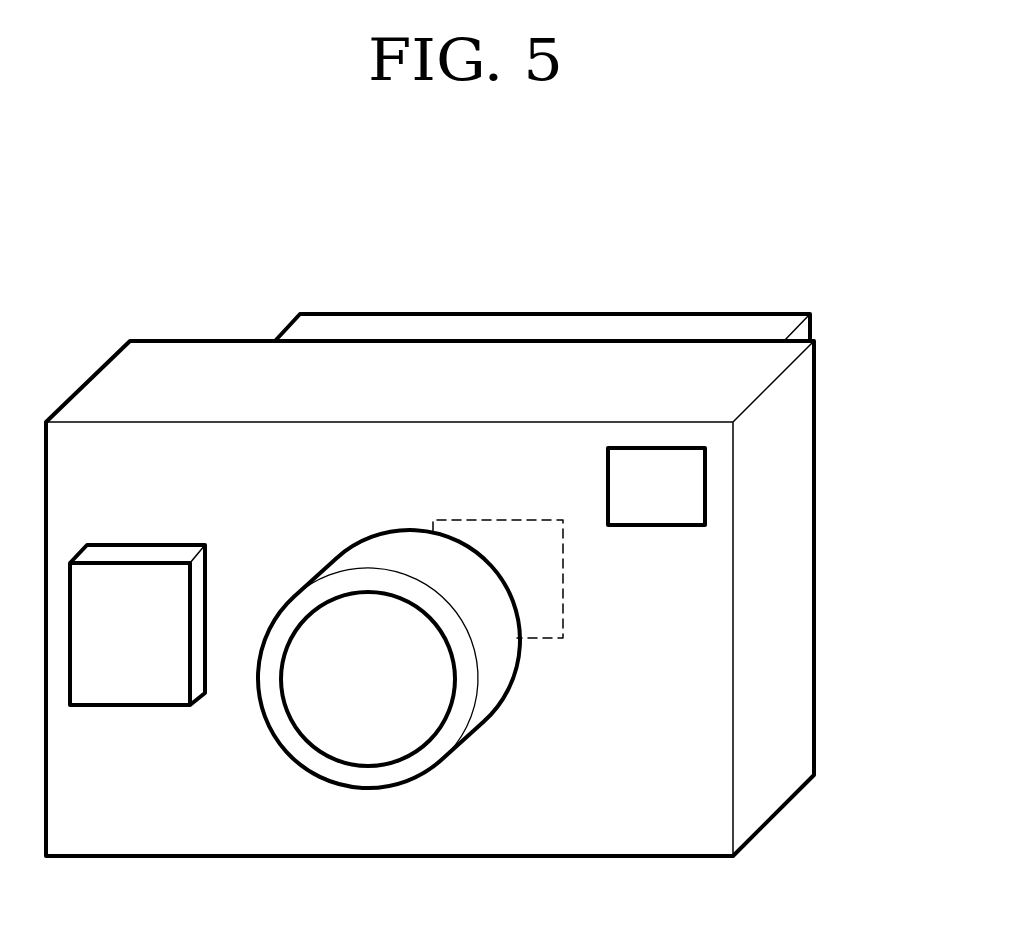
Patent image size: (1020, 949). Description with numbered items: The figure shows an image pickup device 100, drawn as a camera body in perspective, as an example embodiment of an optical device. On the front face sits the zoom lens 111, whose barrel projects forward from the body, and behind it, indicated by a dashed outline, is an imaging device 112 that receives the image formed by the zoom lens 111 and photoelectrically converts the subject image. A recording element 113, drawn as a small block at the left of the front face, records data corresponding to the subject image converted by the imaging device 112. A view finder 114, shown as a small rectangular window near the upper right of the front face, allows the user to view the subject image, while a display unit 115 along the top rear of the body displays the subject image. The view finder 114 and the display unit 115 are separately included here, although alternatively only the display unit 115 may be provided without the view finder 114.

The image pickup device 100 is at (667, 830).
The zoom lens 111 is at (368, 748).
The imaging device 112 is at (545, 633).
The recording element 113 is at (145, 695).
The view finder 114 is at (695, 490).
The display unit 115 is at (632, 320).